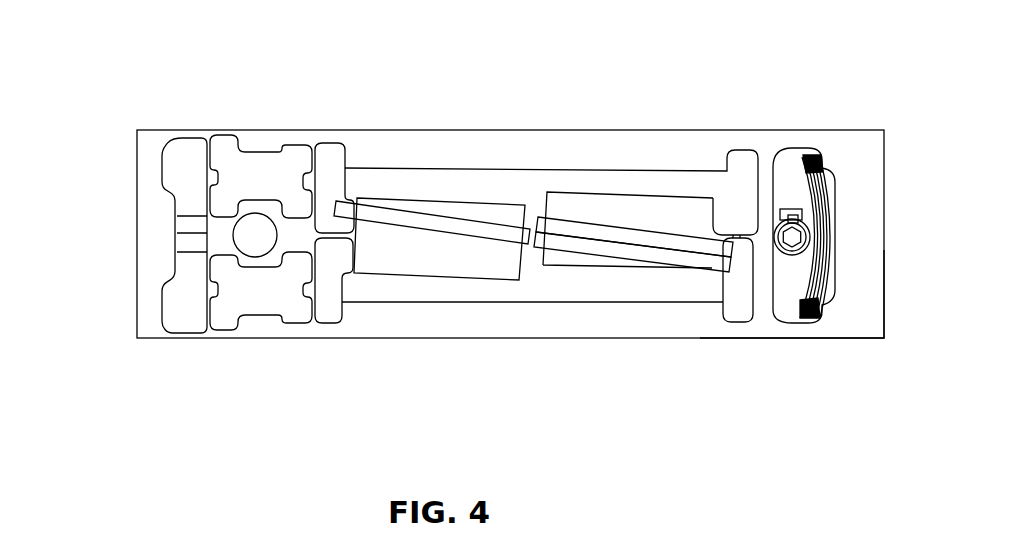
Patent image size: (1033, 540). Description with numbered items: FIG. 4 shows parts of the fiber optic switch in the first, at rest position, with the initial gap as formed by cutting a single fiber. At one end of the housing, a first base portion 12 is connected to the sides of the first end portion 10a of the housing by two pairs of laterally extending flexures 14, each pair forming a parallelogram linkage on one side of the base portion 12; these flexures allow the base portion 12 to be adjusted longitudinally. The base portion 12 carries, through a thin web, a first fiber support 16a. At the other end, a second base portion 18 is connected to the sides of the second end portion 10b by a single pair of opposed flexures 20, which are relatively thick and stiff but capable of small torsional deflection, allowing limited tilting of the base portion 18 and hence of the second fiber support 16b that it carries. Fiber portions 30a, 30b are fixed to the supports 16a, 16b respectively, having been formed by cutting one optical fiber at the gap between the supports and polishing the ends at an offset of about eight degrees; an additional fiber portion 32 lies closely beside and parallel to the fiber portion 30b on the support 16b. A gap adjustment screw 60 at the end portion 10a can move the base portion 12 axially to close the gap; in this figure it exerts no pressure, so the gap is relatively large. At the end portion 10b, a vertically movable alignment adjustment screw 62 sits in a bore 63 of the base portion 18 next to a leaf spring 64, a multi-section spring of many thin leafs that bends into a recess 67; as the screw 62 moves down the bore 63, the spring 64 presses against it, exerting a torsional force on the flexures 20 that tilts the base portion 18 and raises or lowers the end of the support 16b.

The first end portion of the housing 10a is at (137, 188).
The second end portion of the housing 10b is at (884, 336).
The first base portion 12 is at (258, 202).
The laterally extending flexures 14 is at (303, 288).
The first fiber support 16a is at (430, 255).
The second fiber support 16b is at (635, 207).
The second base portion 18 is at (763, 190).
The opposed flexures 20 is at (759, 237).
The first fiber portion 30a is at (495, 230).
The second fiber portion 30b is at (602, 250).
The additional fiber portion 32 is at (608, 227).
The gap adjustment screw 60 is at (195, 215).
The alignment adjustment screw 62 is at (793, 228).
The bore 63 is at (777, 220).
The leaf spring 64 is at (812, 155).
The recess 67 is at (838, 178).